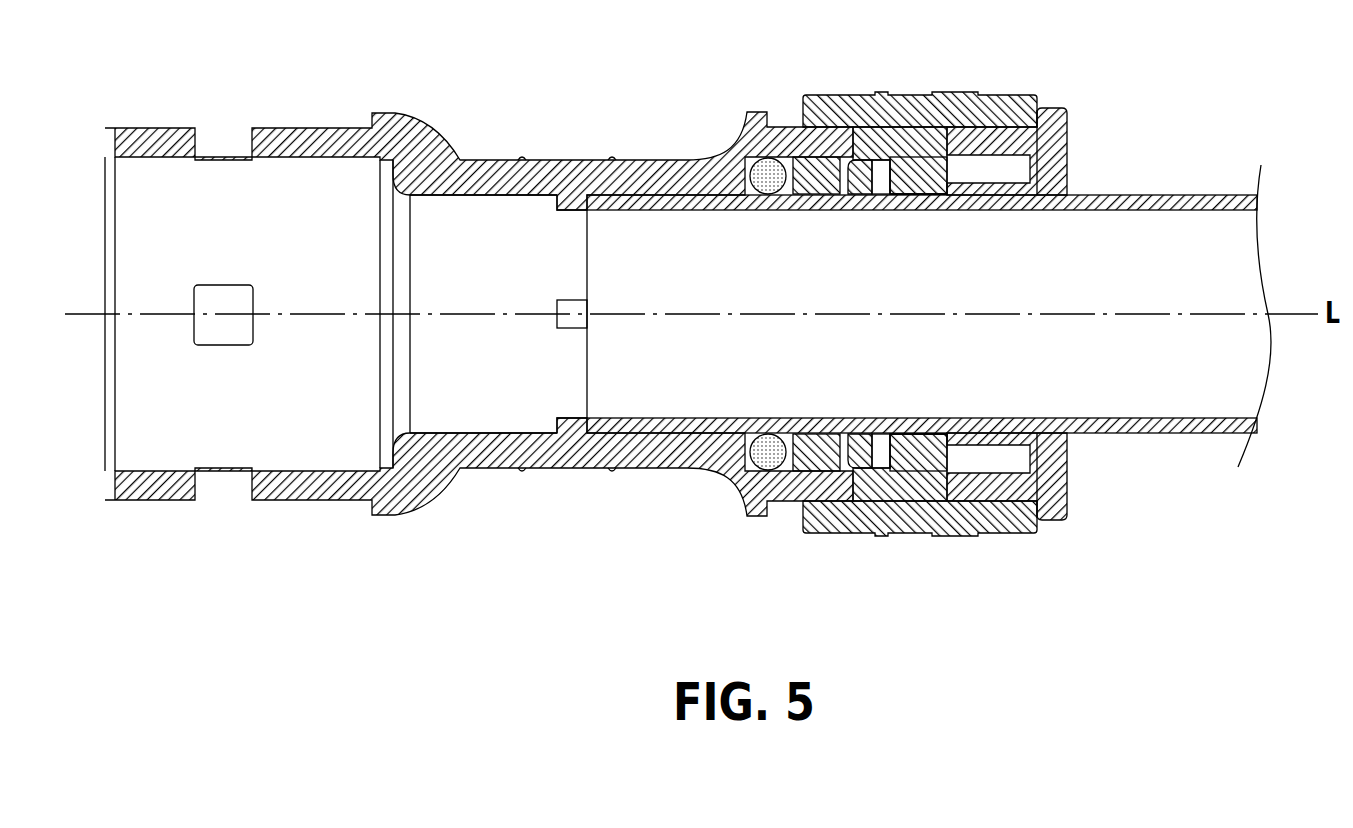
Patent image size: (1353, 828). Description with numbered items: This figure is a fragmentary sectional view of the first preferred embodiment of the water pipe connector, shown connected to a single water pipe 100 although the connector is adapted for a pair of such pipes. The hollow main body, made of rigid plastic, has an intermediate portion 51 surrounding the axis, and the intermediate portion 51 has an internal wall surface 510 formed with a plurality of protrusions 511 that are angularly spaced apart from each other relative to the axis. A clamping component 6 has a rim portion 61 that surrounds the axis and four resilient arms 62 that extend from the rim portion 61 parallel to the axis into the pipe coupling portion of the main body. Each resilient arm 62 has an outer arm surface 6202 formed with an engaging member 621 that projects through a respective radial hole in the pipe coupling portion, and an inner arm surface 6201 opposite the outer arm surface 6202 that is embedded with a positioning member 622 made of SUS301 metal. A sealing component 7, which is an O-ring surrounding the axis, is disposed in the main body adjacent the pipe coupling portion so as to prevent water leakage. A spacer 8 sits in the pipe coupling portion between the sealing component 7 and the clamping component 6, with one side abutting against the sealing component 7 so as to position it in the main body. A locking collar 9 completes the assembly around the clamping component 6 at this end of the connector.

The intermediate portion 51 is at (563, 167).
The internal wall surface 510 is at (522, 197).
The protrusions 511 is at (555, 208).
The water pipe 100 is at (1143, 435).
The sealing component 7 is at (737, 457).
The spacer 8 is at (821, 466).
The resilient arm 62 is at (866, 253).
The positioning member 622 is at (862, 167).
The outer arm surface 6202 is at (868, 127).
The engaging member 621 is at (918, 127).
The inner arm surface 6201 is at (896, 197).
The locking collar 9 is at (917, 533).
The clamping component 6 is at (1070, 268).
The rim portion 61 is at (1067, 146).